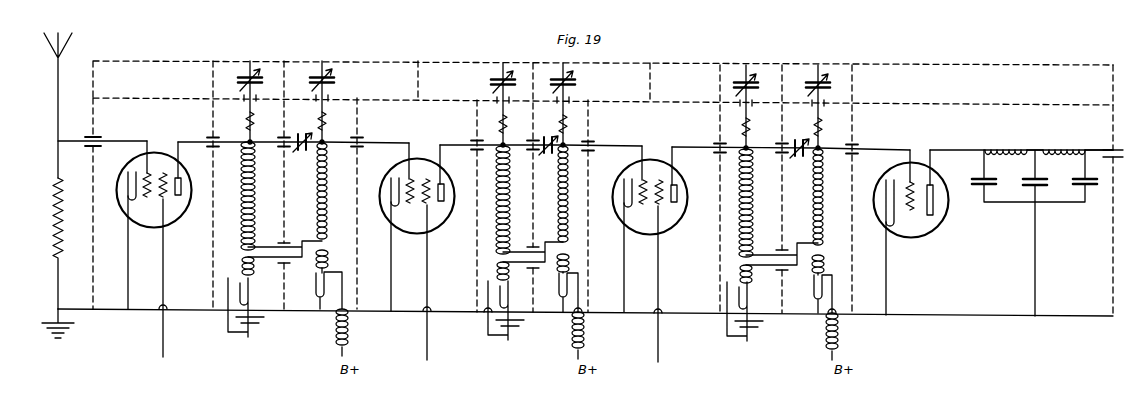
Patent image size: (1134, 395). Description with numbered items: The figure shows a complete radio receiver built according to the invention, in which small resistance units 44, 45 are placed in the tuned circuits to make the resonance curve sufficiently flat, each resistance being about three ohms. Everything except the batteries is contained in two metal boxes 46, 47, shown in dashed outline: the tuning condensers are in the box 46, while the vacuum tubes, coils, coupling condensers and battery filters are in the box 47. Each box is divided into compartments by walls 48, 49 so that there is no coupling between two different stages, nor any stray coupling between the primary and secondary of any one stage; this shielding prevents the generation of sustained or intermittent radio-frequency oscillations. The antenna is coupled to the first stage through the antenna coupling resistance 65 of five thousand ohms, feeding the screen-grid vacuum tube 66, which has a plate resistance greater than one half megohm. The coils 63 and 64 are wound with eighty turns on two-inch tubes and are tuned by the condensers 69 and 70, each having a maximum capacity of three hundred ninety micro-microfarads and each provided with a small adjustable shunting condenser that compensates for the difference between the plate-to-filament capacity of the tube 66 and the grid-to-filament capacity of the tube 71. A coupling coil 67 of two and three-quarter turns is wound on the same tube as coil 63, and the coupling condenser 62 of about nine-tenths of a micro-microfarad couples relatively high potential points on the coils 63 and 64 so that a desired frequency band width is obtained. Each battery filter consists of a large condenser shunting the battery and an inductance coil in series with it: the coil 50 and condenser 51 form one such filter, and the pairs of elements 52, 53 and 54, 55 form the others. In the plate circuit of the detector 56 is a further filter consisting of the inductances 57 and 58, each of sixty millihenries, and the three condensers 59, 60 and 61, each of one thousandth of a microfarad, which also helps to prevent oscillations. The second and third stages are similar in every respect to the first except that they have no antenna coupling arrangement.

The resistance unit 44 is at (254, 120).
The resistance unit 45 is at (326, 119).
The metal box 46 is at (145, 66).
The metal box 47 is at (103, 118).
The wall 48 is at (228, 68).
The wall 49 is at (212, 281).
The coil 50 is at (349, 337).
The condenser 51 is at (316, 290).
The filter element 52 is at (560, 292).
The filter element 53 is at (586, 337).
The filter element 54 is at (813, 290).
The filter element 55 is at (842, 337).
The detector 56 is at (917, 160).
The inductance 57 is at (1010, 149).
The inductance 58 is at (1067, 144).
The condenser 59 is at (979, 193).
The condenser 60 is at (1031, 189).
The condenser 61 is at (1082, 189).
The coupling condenser 62 is at (300, 161).
The coil 63 is at (252, 213).
The coil 64 is at (325, 216).
The antenna coupling resistance 65 is at (45, 243).
The screen-grid vacuum tube 66 is at (160, 152).
The coupling coil 67 is at (255, 270).
The condenser 69 is at (262, 82).
The condenser 70 is at (334, 82).
The vacuum tube 71 is at (418, 160).